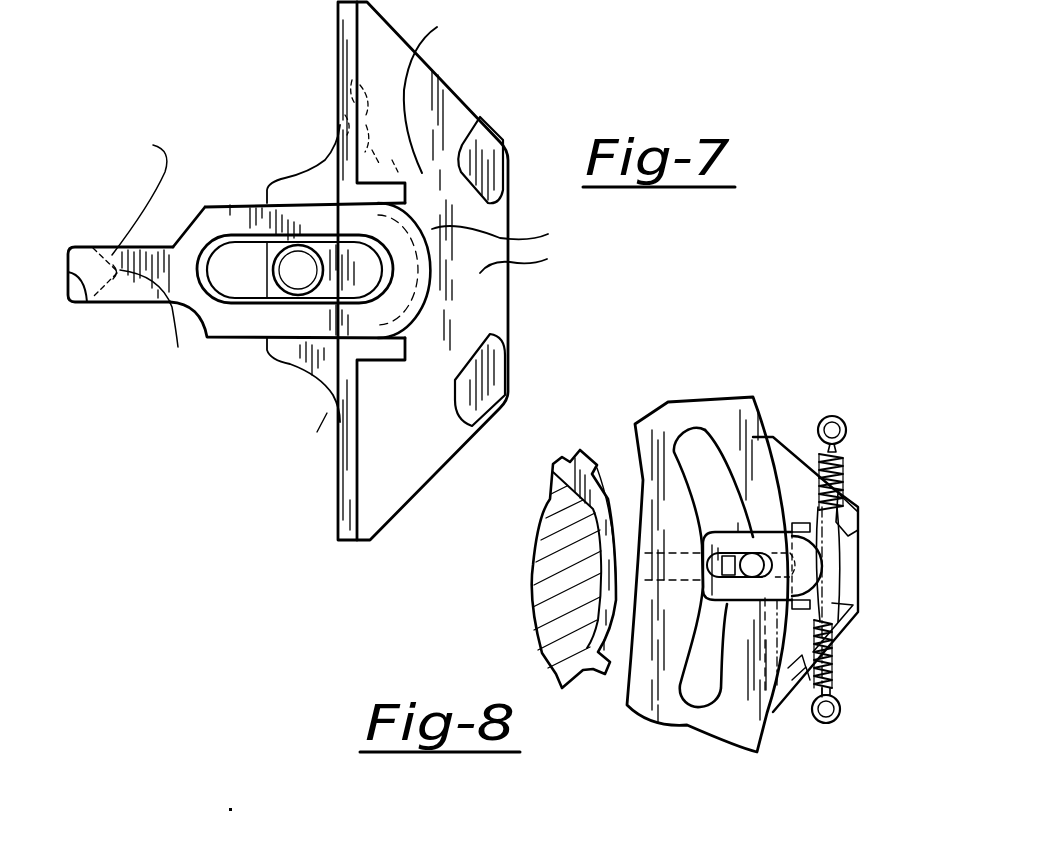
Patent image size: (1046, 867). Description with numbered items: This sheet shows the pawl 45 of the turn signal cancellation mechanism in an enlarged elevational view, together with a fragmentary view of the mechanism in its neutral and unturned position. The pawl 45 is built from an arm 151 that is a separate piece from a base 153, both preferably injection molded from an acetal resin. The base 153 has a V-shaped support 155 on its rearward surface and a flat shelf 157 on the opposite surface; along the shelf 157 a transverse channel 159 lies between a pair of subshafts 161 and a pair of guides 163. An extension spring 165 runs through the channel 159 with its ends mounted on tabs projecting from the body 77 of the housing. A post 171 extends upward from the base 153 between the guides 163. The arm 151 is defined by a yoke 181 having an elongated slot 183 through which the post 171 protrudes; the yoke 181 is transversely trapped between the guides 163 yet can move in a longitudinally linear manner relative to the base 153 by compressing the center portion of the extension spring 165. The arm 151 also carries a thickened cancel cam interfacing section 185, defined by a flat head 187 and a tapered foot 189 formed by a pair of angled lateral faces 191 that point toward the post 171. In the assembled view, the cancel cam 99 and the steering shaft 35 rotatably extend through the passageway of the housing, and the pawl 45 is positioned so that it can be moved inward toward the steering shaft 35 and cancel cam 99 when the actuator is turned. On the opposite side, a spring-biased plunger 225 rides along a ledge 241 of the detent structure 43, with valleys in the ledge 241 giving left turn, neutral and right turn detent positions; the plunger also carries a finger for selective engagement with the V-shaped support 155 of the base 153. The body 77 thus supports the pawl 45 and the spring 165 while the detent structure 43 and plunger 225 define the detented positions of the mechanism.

In FIG. 7, the pawl 45 is at (508, 66).
In FIG. 8, the pawl 45 is at (800, 430).
In FIG. 7, the transverse channel 159 is at (441, 96).
In FIG. 7, the V-shaped support 155 is at (350, 82).
In FIG. 7, the subshafts 161 is at (488, 147).
In FIG. 7, the guides 163 is at (320, 188).
In FIG. 7, the angled lateral faces 191 is at (128, 393).
In FIG. 7, the cancel cam interfacing section 185 is at (112, 172).
In FIG. 7, the yoke 181 is at (238, 222).
In FIG. 7, the arm 151 is at (179, 262).
In FIG. 7, the flat shelf 157 is at (498, 220).
In FIG. 7, the base 153 is at (531, 261).
In FIG. 7, the flat head 187 is at (92, 283).
In FIG. 7, the tapered foot 189 is at (160, 326).
In FIG. 7, the elongated slot 183 is at (252, 303).
In FIG. 7, the post 171 is at (296, 280).
In FIG. 8, the body portion 77 is at (732, 415).
In FIG. 8, the extension spring 165 is at (842, 467).
In FIG. 8, the cancel cam 99 is at (592, 478).
In FIG. 8, the steering shaft 35 is at (547, 547).
In FIG. 8, the plunger 225 is at (728, 692).
In FIG. 8, the ledge 241 is at (795, 705).
In FIG. 8, the detent structure 43 is at (781, 699).